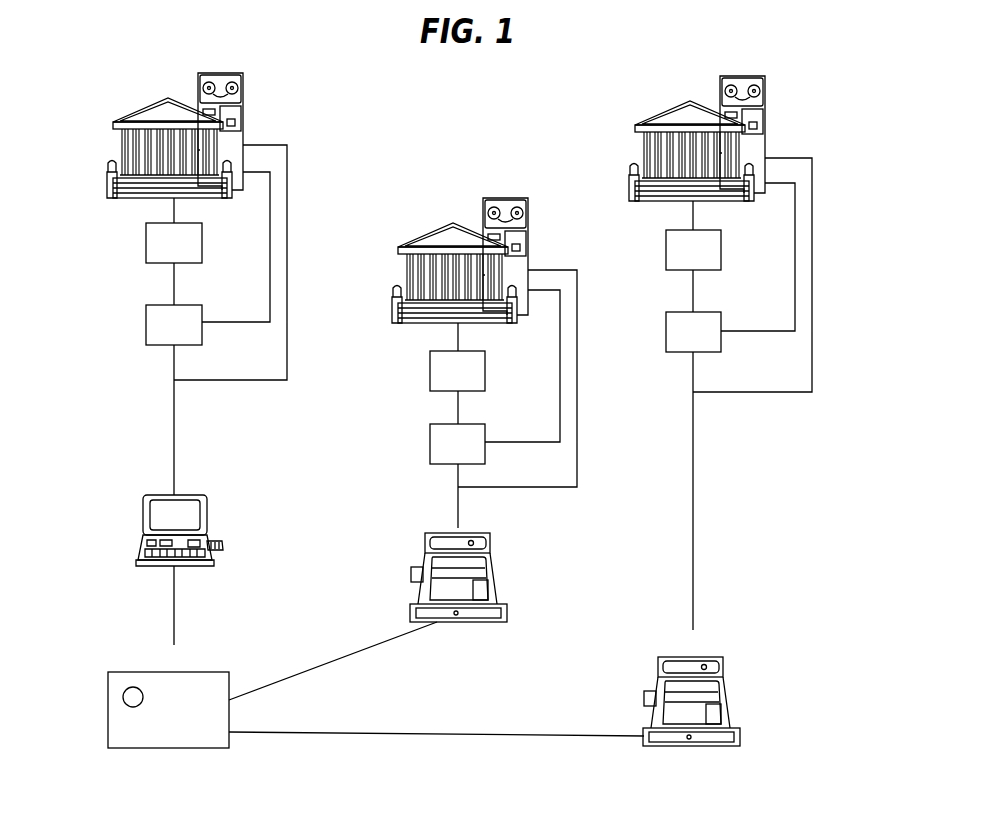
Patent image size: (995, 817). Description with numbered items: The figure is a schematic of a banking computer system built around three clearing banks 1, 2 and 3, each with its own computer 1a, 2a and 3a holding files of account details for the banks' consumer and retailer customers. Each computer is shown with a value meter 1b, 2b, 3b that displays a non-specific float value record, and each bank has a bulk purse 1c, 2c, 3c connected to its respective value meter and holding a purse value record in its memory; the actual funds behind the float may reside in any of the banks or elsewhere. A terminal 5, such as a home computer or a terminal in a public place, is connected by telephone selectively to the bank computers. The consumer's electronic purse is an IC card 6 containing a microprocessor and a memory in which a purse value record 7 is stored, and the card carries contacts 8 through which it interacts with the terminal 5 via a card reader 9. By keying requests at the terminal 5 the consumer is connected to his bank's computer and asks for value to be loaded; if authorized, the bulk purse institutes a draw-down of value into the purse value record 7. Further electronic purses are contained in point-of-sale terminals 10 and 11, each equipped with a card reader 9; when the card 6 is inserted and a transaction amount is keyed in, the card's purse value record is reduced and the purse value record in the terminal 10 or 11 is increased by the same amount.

The clearing bank 1 is at (164, 135).
The computer 1a is at (234, 226).
The value meter 1b is at (174, 230).
The bulk purse 1c is at (174, 379).
The clearing bank 2 is at (685, 138).
The computer 2a is at (754, 234).
The value meter 2b is at (693, 235).
The bulk purse 2c is at (693, 450).
The clearing bank 3 is at (447, 260).
The computer 3a is at (517, 342).
The value meter 3b is at (457, 357).
The bulk purse 3c is at (457, 459).
The terminal 5 is at (165, 570).
The IC card 6 is at (170, 619).
The purse value record 7 is at (188, 683).
The contacts 8 is at (133, 686).
The card reader 9 is at (219, 553).
The terminal 10 is at (381, 616).
The terminal 11 is at (500, 701).